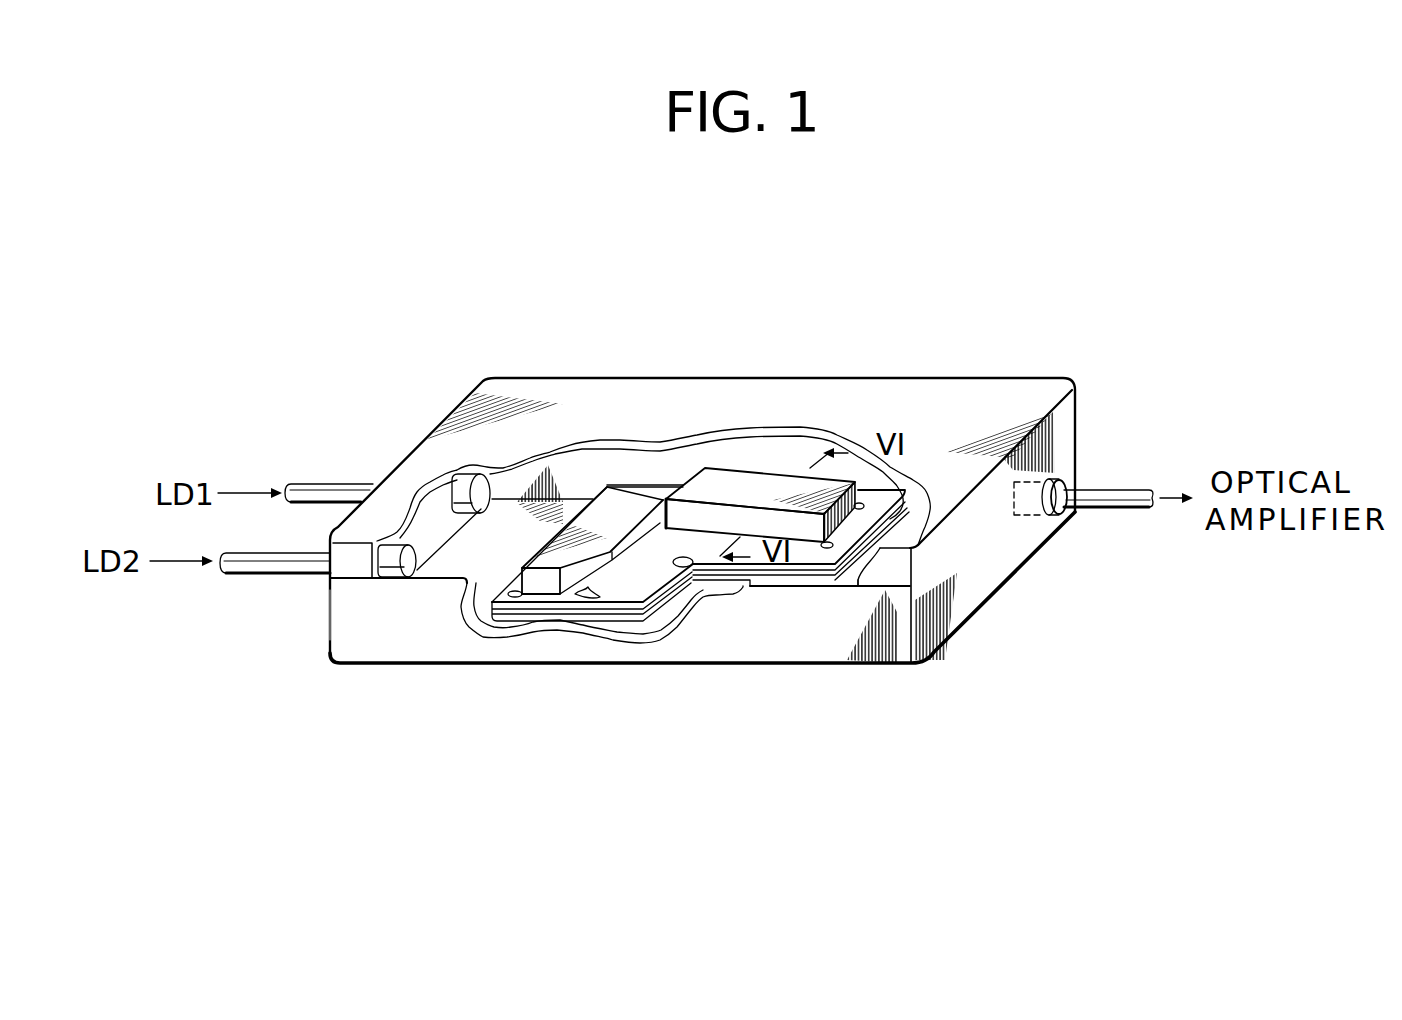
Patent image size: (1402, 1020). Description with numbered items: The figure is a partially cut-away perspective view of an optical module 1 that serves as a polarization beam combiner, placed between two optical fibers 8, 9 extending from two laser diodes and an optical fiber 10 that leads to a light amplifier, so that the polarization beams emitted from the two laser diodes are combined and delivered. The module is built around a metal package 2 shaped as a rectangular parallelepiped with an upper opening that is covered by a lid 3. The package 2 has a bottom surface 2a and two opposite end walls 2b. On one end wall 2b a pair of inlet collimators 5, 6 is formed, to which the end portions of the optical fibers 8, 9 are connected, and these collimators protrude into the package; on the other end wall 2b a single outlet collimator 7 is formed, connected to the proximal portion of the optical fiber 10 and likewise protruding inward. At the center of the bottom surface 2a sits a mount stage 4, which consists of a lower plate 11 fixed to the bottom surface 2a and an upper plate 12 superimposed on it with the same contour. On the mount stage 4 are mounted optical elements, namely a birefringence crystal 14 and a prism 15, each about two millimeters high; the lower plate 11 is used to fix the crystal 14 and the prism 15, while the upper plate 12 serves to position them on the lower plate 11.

The optical module 1 is at (846, 331).
The package 2 is at (790, 670).
The bottom surface 2a is at (503, 561).
The end walls 2b is at (327, 615).
The lid 3 is at (930, 400).
The mount stage 4 is at (671, 470).
The inlet collimator 5 is at (462, 482).
The inlet collimator 6 is at (407, 565).
The outlet collimator 7 is at (1071, 483).
The optical fiber 8 is at (322, 485).
The optical fiber 9 is at (245, 562).
The optical fiber 10 is at (1110, 497).
The lower plate 11 is at (598, 612).
The upper plate 12 is at (540, 604).
The birefringence crystal 14 is at (740, 486).
The prism 15 is at (612, 520).